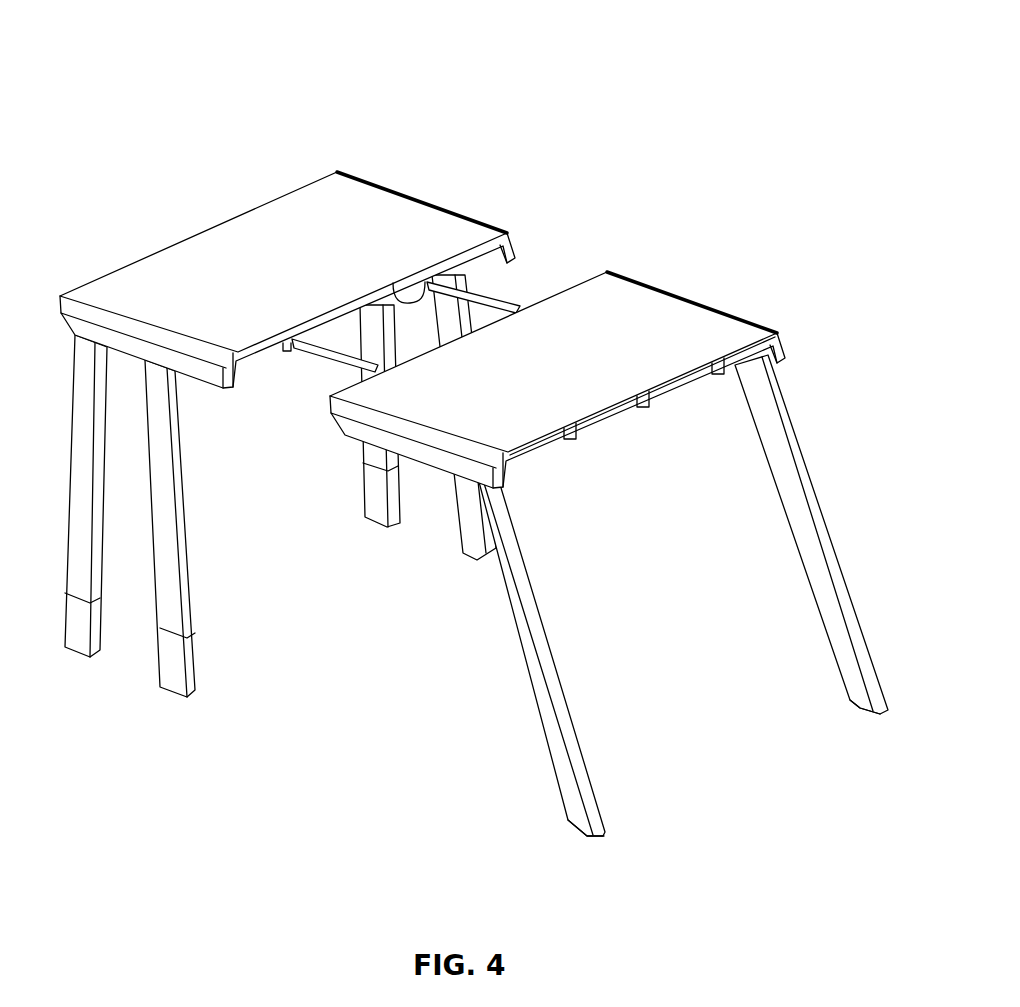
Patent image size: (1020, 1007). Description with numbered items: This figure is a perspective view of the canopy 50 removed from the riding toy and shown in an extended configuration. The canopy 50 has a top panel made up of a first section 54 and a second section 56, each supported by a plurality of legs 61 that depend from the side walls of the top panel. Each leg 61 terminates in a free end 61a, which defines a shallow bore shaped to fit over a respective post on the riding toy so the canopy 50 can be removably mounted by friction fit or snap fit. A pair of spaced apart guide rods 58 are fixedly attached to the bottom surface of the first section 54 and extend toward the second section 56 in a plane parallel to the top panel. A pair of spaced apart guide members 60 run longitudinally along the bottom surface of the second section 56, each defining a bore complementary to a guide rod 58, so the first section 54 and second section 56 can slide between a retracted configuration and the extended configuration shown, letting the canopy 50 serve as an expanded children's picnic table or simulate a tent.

The canopy 50 is at (567, 107).
The first section 54 is at (657, 290).
The second section 56 is at (373, 183).
The guide rods 58 is at (515, 295).
The guide members 60 is at (403, 298).
The legs 61 is at (183, 540).
The free end 61a is at (180, 692).